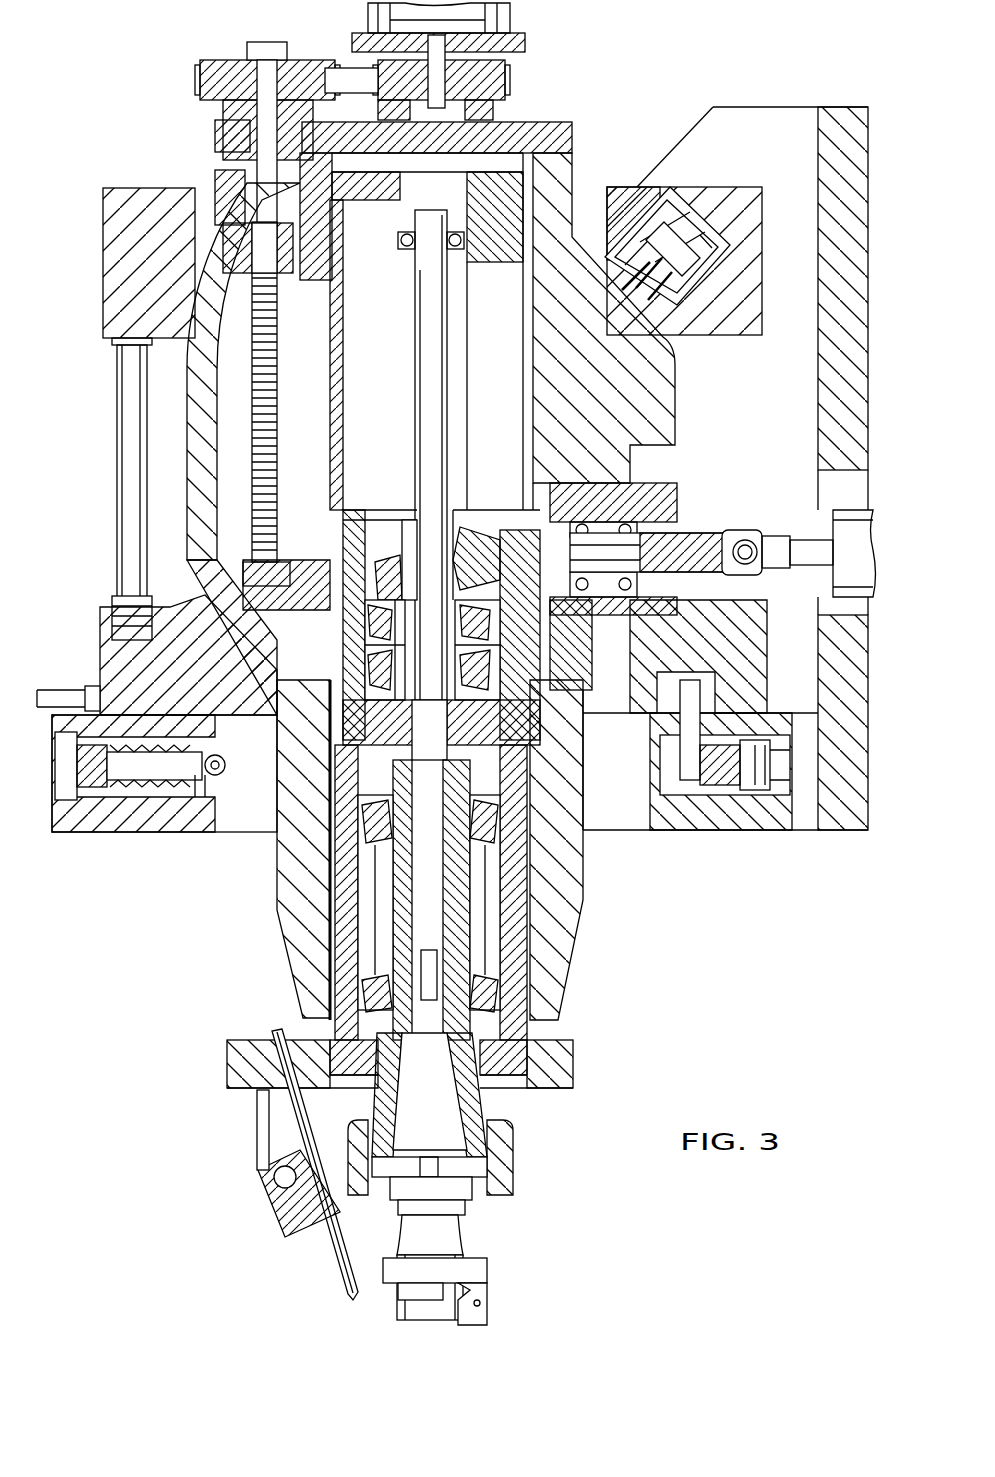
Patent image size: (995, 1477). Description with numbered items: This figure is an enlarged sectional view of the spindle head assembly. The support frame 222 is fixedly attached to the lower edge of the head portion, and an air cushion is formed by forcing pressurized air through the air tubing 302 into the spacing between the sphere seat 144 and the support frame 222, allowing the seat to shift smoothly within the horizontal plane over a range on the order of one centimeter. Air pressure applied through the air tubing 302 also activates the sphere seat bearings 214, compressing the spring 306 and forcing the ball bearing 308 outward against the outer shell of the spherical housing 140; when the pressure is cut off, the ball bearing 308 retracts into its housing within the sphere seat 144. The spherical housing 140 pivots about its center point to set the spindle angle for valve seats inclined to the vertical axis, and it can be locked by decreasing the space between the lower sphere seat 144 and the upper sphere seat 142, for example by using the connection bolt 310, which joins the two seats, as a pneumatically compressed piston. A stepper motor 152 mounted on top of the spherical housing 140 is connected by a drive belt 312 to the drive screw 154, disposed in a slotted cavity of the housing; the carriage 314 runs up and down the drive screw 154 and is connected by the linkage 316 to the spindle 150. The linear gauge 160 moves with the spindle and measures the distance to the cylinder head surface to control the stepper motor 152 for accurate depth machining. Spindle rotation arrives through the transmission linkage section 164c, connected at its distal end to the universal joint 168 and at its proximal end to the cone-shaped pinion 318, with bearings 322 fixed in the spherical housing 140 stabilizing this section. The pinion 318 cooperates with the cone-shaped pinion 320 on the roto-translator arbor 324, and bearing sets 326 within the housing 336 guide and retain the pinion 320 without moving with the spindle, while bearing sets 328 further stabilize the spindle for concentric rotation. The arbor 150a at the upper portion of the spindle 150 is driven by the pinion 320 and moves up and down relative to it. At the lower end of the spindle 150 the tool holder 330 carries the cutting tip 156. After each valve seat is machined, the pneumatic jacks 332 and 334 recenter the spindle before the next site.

The spherical housing 140 is at (640, 400).
The upper sphere seat 142 is at (105, 233).
The sphere seat 144 is at (100, 612).
The spindle 150 is at (432, 310).
The arbor 150a is at (420, 365).
The stepper motor 152 is at (512, 17).
The drive screw 154 is at (262, 190).
The cutting tip 156 is at (486, 1302).
The linear gauge 160 is at (330, 1248).
The transmission linkage section 164c is at (637, 548).
The universal joint 168 is at (750, 545).
The sphere seat bearings 214 is at (652, 215).
The support frame 222 is at (97, 823).
The air tubing 302 is at (70, 690).
The spring 306 is at (700, 250).
The ball bearing 308 is at (695, 335).
The connection bolt 310 is at (125, 440).
The drive belt 312 is at (352, 75).
The carriage 314 is at (247, 225).
The linkage 316 is at (372, 258).
The cone-shaped pinion 318 is at (474, 530).
The cone-shaped pinion 320 is at (395, 572).
The bearings 322 is at (560, 500).
The roto-translator arbor 324 is at (395, 650).
The bearing sets 326 is at (367, 678).
The bearing sets 328 is at (360, 812).
The tool holder 330 is at (447, 1105).
The pneumatic jack 332 is at (153, 765).
The pneumatic jack 334 is at (700, 768).
The housing 336 is at (400, 527).